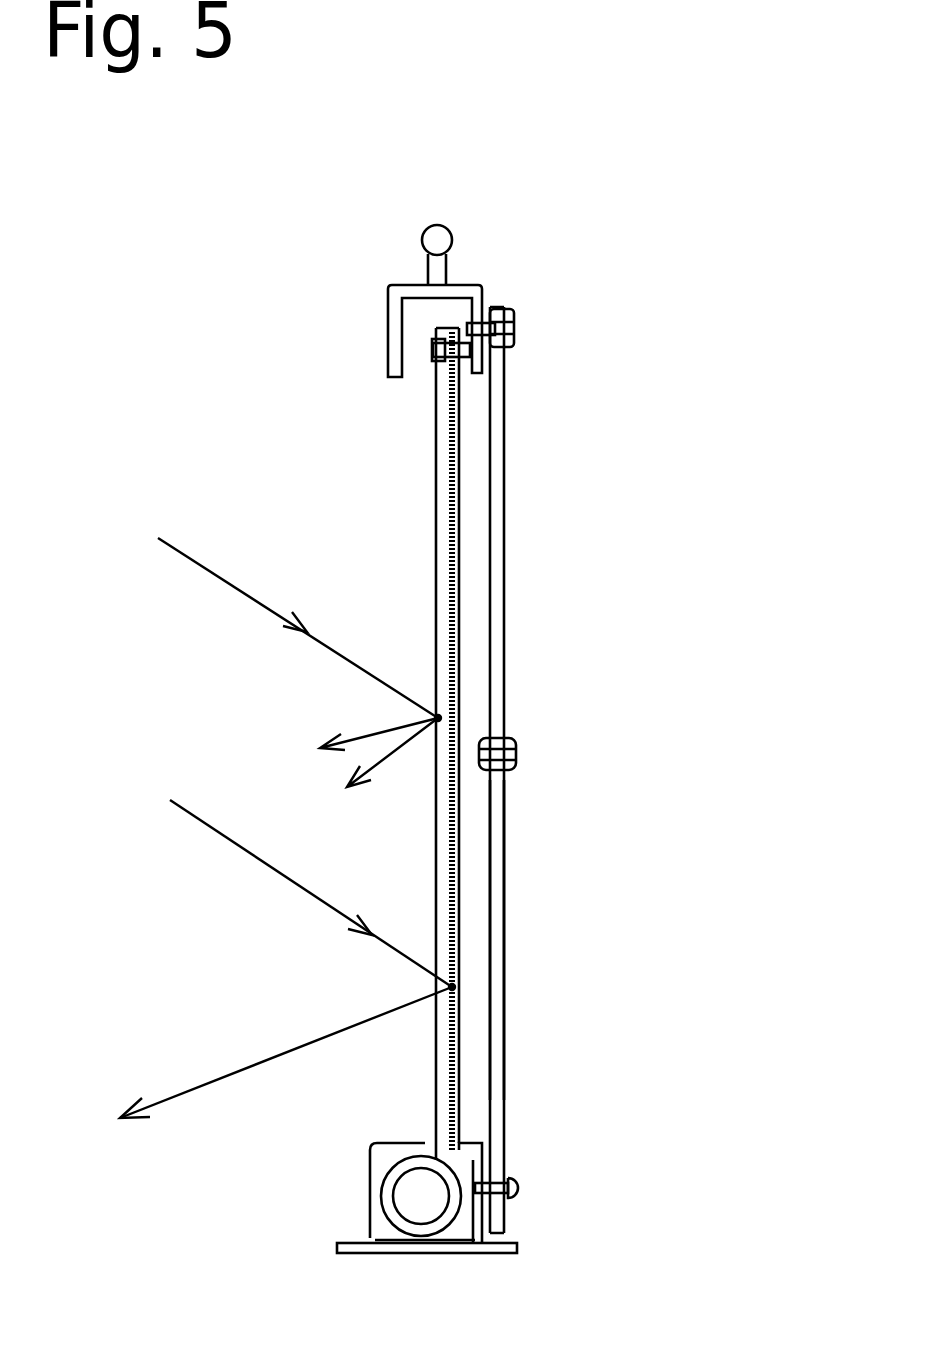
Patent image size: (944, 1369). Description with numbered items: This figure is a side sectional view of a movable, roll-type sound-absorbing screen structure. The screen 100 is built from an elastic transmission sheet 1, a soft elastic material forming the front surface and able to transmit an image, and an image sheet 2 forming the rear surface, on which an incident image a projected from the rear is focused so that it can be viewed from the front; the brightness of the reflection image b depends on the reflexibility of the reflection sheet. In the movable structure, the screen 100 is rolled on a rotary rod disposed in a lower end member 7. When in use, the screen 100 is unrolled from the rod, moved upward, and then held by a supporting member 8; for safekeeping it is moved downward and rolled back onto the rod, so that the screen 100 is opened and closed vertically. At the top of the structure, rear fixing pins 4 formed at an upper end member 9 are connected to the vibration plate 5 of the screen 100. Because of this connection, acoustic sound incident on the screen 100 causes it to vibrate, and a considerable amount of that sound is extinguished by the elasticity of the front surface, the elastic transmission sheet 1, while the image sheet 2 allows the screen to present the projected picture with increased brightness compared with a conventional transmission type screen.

The elastic transmission sheet 1 is at (447, 552).
The image sheet 2 is at (457, 610).
The rear fixing pins 4 is at (502, 315).
The vibration plate 5 is at (455, 342).
The lower end member 7 is at (368, 1207).
The supporting member 8 is at (490, 922).
The upper end member 9 is at (458, 292).
The screen 100 is at (447, 842).
The incident image a is at (274, 865).
The reflection image b is at (262, 1080).